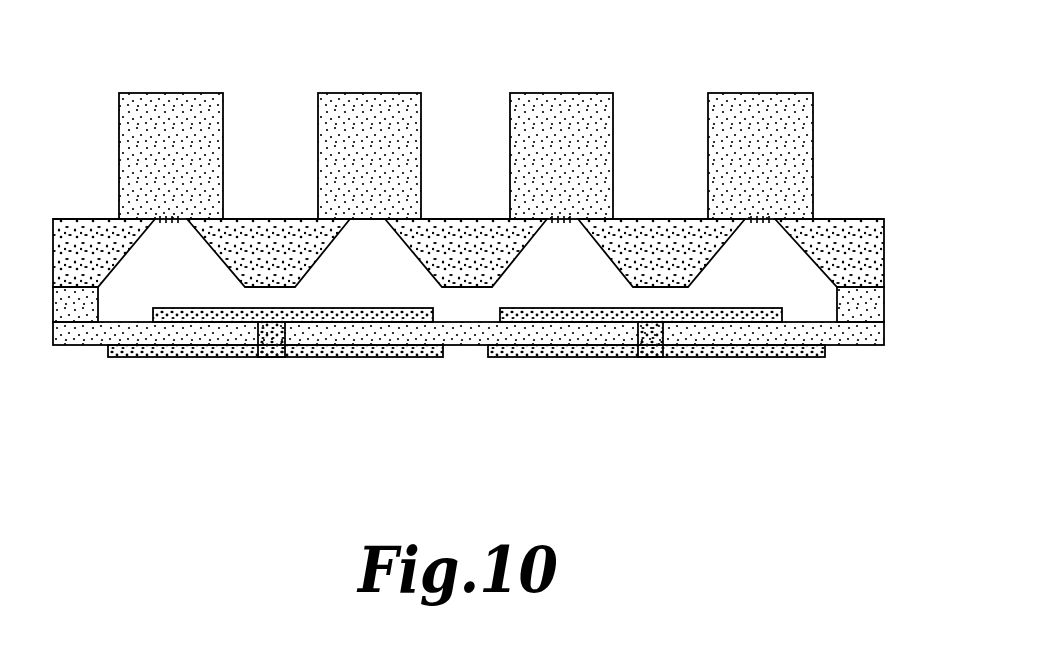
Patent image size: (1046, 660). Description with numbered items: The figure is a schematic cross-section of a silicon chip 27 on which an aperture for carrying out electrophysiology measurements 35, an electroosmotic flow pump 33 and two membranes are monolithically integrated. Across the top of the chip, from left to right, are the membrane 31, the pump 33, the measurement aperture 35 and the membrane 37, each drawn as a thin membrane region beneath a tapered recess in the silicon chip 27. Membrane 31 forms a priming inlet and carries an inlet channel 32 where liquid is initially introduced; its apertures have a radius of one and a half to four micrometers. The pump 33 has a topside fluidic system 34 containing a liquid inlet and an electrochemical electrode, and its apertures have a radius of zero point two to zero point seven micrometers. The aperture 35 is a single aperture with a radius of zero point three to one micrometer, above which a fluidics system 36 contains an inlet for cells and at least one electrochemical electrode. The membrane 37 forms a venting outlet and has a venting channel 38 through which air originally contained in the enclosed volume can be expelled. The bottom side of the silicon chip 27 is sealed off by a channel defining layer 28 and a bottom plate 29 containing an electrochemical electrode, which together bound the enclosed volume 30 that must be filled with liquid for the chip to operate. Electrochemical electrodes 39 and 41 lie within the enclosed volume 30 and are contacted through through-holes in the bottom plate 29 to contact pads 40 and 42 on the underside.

The silicon chip 27 is at (849, 240).
The channel defining layer 28 is at (77, 313).
The bottom plate 29 is at (146, 335).
The enclosed volume 30 is at (466, 305).
The membrane 31 is at (170, 215).
The inlet channel 32 is at (180, 122).
The electroosmotic flow pump 33 is at (364, 212).
The topside fluidic system 34 is at (378, 124).
The aperture for carrying out electrophysiology measurements 35 is at (558, 214).
The fluidics system 36 is at (572, 124).
The membrane 37 is at (758, 214).
The venting channel 38 is at (770, 124).
The electrochemical electrode 39 is at (366, 316).
The contact pad 40 is at (272, 340).
The electrochemical electrode 41 is at (541, 318).
The contact pad 42 is at (651, 342).